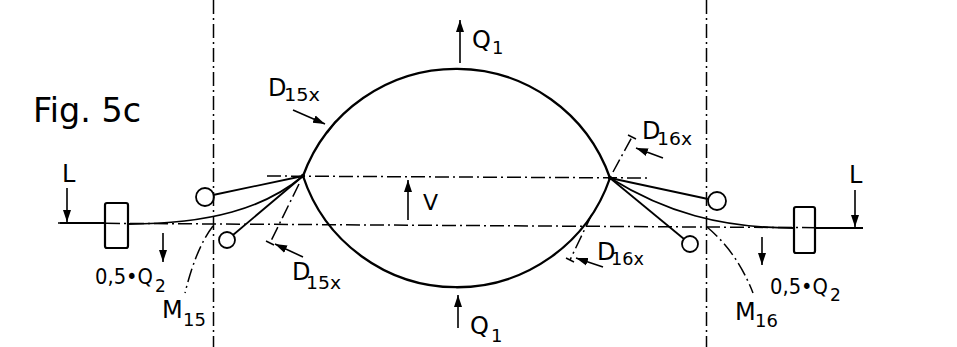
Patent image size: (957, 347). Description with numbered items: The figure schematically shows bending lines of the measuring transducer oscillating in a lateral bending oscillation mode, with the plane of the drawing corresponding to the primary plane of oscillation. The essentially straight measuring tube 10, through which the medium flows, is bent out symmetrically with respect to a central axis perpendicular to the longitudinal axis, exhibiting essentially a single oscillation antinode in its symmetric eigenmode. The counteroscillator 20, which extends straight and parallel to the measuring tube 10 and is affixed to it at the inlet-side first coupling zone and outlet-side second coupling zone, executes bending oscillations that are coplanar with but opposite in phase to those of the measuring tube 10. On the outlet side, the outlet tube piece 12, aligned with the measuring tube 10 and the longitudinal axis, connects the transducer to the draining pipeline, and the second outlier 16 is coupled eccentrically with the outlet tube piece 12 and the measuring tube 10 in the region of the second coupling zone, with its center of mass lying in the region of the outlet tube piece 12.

The measuring tube 10 is at (378, 70).
The counteroscillator 20 is at (540, 277).
The outlet tube piece 12 is at (740, 218).
The second outlier 16 is at (682, 252).